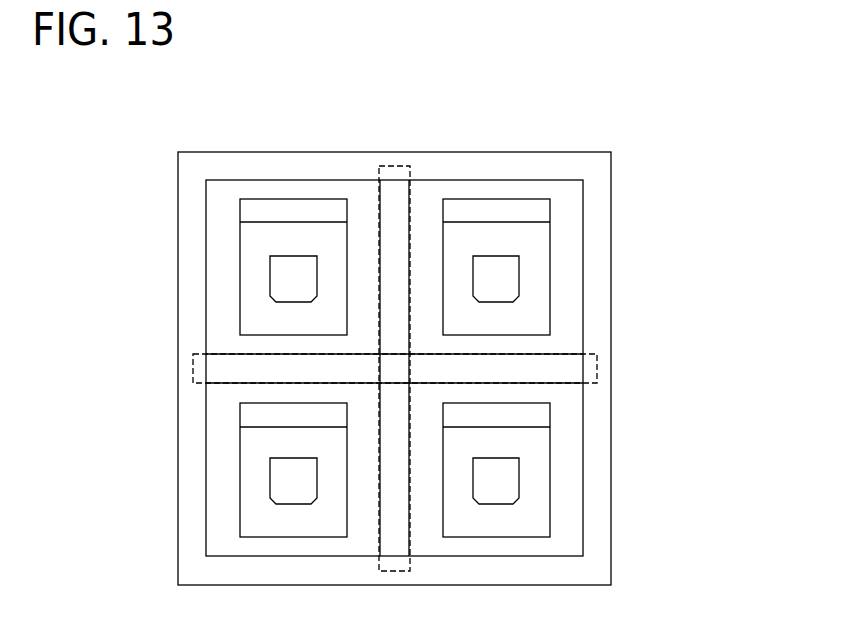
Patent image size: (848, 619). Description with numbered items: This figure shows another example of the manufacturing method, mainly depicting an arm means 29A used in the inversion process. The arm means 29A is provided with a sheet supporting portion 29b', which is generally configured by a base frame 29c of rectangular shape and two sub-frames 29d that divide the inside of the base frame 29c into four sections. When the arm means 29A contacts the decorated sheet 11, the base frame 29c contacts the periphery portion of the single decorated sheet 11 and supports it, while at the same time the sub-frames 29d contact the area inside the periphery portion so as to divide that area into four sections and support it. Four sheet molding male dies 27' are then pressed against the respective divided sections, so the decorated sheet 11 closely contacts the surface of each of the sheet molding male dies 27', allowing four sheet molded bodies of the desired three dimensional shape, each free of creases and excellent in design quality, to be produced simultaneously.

The decorated sheet 11 is at (572, 405).
The arm means 29A is at (177, 237).
The sheet supporting portion 29b' is at (764, 166).
The base frame 29c is at (602, 183).
The sub-frames 29d is at (396, 190).
The sheet molding male dies 27' is at (394, 380).